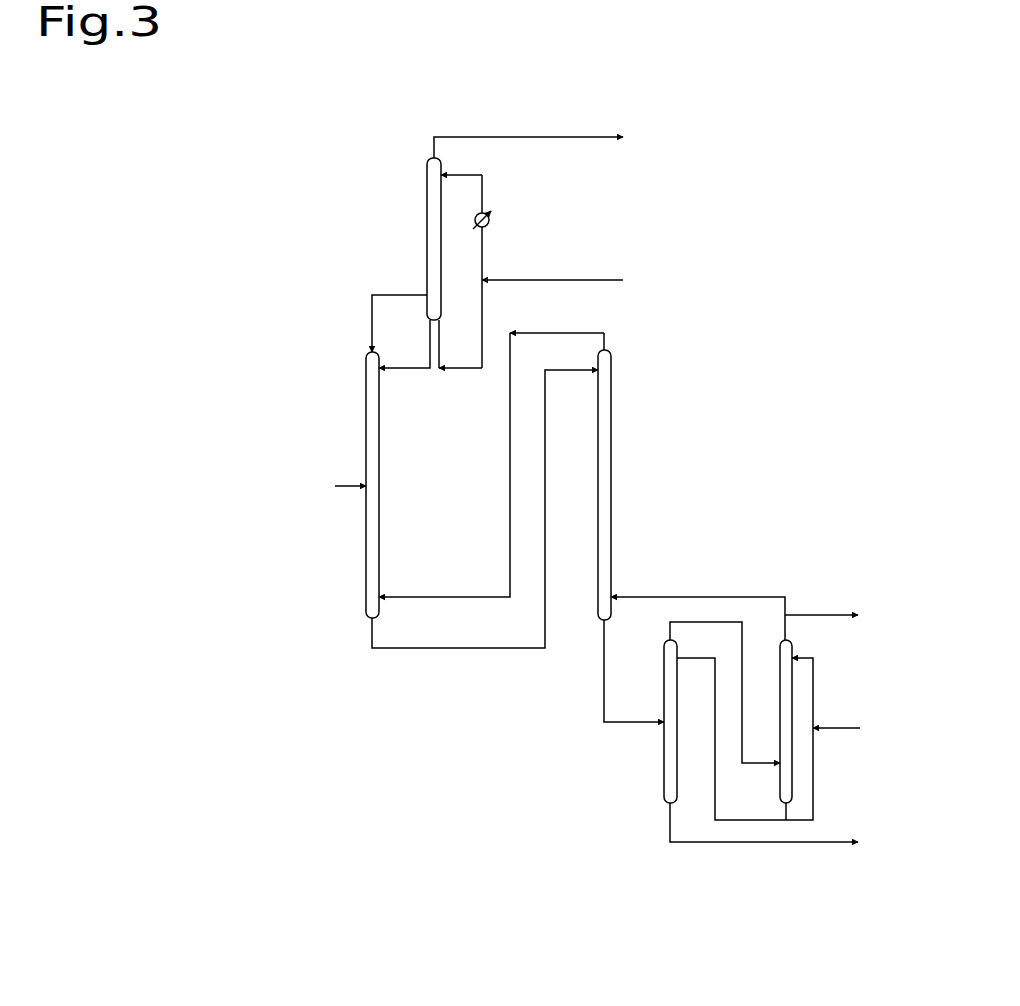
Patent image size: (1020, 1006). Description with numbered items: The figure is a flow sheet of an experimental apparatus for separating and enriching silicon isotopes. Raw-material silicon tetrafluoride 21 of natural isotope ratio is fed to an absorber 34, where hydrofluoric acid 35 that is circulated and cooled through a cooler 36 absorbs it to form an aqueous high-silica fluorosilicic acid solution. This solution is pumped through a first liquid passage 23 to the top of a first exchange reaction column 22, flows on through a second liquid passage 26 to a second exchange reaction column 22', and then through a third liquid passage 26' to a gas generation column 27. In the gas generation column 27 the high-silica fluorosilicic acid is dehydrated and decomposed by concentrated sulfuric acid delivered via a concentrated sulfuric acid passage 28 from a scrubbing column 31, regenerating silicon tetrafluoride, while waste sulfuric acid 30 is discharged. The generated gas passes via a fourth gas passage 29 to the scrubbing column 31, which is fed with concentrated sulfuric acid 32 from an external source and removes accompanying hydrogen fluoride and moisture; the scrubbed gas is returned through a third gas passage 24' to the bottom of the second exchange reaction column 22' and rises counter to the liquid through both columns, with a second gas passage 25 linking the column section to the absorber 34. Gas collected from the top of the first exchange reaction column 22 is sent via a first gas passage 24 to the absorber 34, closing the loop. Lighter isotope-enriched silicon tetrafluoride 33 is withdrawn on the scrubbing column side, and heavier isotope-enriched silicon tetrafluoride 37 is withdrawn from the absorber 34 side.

The silicon tetrafluoride 21 is at (334, 486).
The first exchange reaction column 22 is at (353, 485).
The second exchange reaction column 22' is at (633, 476).
The first liquid passage 23 is at (400, 371).
The first gas passage 24 is at (444, 465).
The third gas passage 24' is at (698, 599).
The second gas passage 25 is at (368, 312).
The second liquid passage 26 is at (485, 531).
The third liquid passage 26' is at (587, 527).
The gas generation column 27 is at (660, 701).
The concentrated sulfuric acid passage 28 is at (713, 756).
The fourth gas passage 29 is at (713, 628).
The waste sulfuric acid 30 is at (783, 827).
The scrubbing column 31 is at (778, 701).
The concentrated sulfuric acid 32 is at (857, 728).
The lighter isotope-enriched silicon tetrafluoride 33 is at (840, 615).
The absorber 34 is at (421, 241).
The hydrofluoric acid 35 is at (575, 280).
The cooler 36 is at (496, 224).
The heavier isotope-enriched silicon tetrafluoride 37 is at (551, 142).